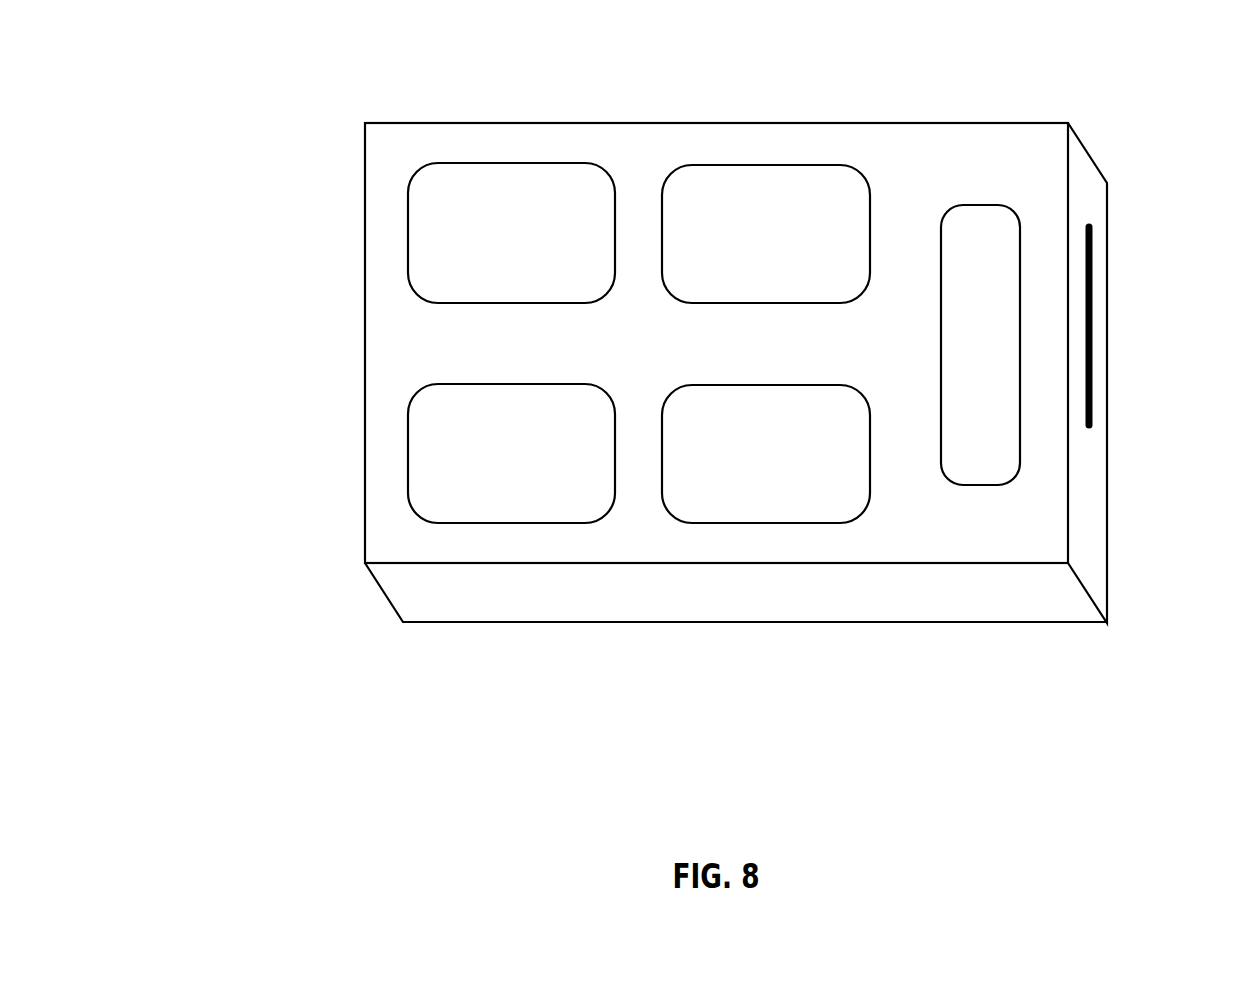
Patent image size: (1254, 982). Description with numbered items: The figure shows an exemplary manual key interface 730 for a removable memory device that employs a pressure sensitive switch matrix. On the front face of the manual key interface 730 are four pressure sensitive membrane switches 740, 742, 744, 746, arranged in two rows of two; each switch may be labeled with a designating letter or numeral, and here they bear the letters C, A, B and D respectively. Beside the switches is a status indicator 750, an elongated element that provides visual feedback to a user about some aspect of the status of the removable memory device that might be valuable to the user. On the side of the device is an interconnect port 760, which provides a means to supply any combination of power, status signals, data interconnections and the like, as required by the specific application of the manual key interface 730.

The manual key interface 730 is at (244, 219).
The pressure sensitive membrane switch 740 is at (462, 484).
The pressure sensitive membrane switch 742 is at (465, 203).
The pressure sensitive membrane switch 744 is at (804, 195).
The pressure sensitive membrane switch 746 is at (795, 495).
The status indicator 750 is at (990, 425).
The interconnect port 760 is at (1092, 282).